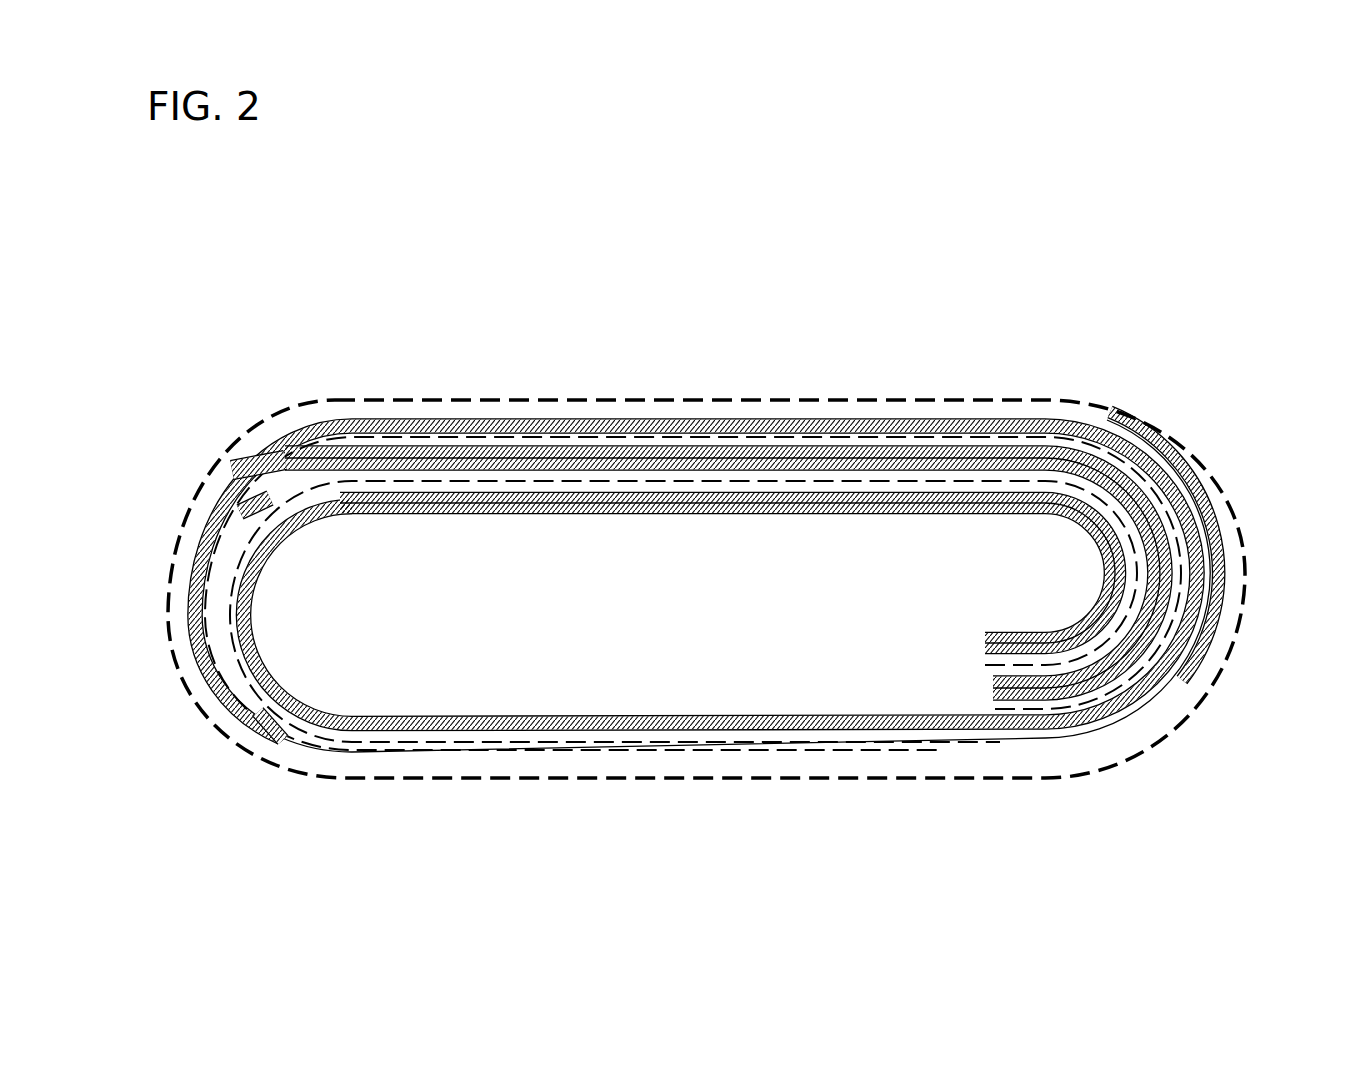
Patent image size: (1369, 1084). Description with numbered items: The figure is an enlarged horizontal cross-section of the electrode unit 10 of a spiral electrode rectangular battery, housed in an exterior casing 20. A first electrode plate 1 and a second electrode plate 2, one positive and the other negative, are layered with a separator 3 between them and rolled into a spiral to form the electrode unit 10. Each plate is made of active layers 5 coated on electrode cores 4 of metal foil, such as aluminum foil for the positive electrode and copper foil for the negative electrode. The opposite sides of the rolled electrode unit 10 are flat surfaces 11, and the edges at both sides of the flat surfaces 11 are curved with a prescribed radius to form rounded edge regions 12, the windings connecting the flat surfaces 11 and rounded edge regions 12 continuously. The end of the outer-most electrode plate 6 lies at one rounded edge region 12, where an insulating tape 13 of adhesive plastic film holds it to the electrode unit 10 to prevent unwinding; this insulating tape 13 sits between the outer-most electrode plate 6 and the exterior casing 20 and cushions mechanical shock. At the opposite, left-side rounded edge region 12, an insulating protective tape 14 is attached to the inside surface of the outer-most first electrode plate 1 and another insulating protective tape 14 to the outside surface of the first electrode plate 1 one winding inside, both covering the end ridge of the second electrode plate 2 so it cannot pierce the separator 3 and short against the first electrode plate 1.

The electrode unit 10 is at (925, 248).
The first electrode plate 1 is at (480, 302).
The second electrode plate 2 is at (700, 302).
The separator 3 is at (548, 487).
The electrode core 4 is at (430, 497).
The active layer 5 is at (374, 492).
The outer-most electrode plate 6 is at (1015, 742).
The flat surface 11 is at (928, 421).
The rounded edge region 12 is at (197, 674).
The insulating tape 13 is at (1188, 690).
The insulating protective tape 14 is at (230, 483).
The exterior casing 20 is at (750, 780).